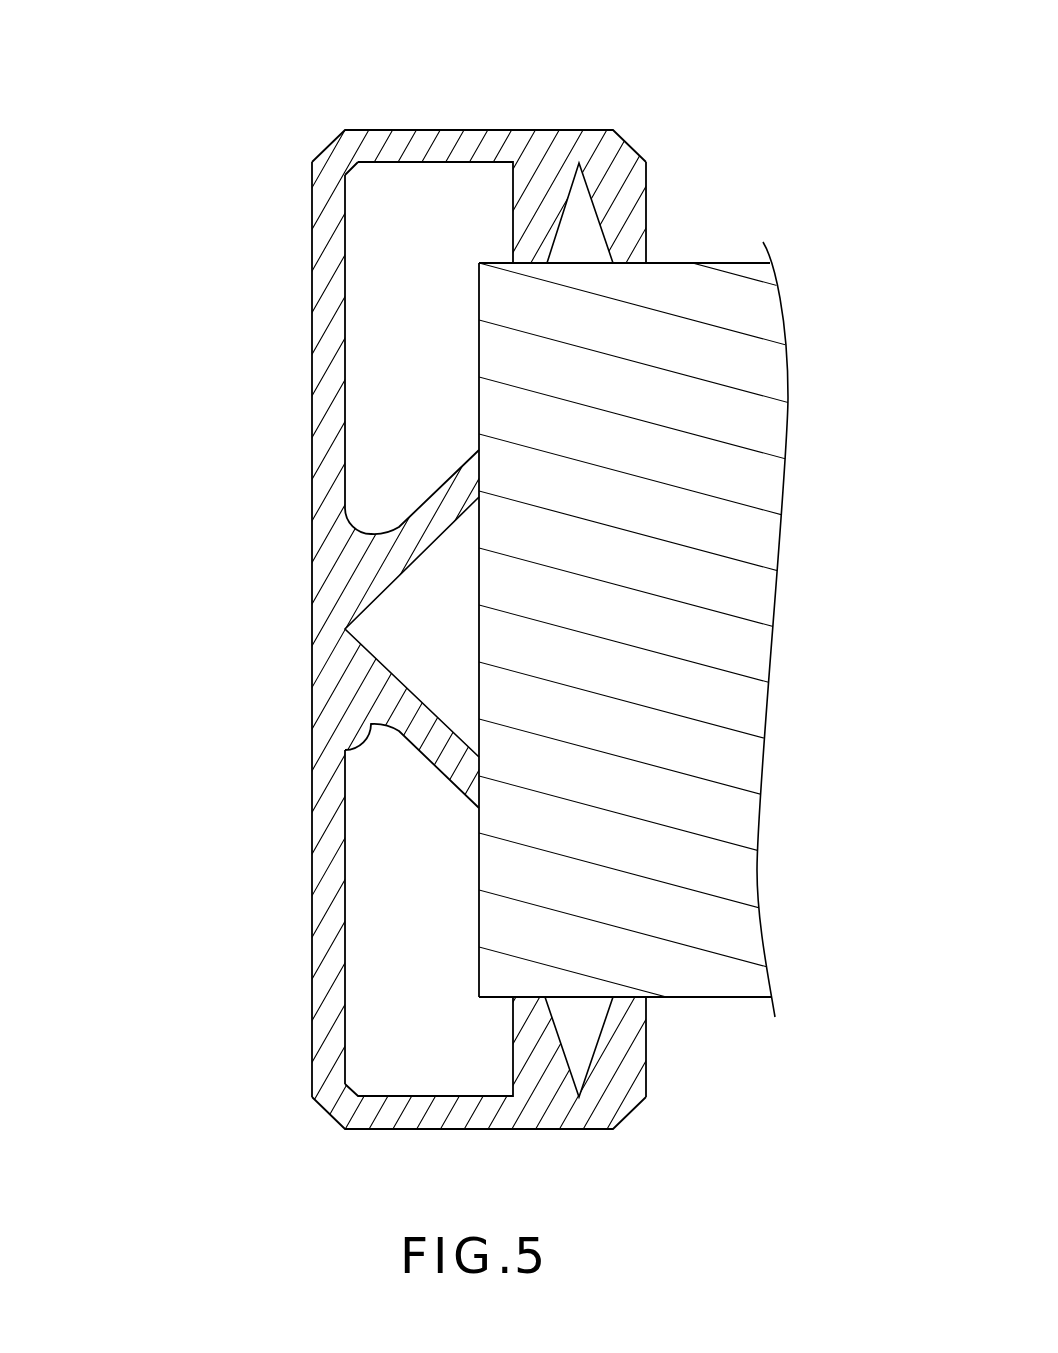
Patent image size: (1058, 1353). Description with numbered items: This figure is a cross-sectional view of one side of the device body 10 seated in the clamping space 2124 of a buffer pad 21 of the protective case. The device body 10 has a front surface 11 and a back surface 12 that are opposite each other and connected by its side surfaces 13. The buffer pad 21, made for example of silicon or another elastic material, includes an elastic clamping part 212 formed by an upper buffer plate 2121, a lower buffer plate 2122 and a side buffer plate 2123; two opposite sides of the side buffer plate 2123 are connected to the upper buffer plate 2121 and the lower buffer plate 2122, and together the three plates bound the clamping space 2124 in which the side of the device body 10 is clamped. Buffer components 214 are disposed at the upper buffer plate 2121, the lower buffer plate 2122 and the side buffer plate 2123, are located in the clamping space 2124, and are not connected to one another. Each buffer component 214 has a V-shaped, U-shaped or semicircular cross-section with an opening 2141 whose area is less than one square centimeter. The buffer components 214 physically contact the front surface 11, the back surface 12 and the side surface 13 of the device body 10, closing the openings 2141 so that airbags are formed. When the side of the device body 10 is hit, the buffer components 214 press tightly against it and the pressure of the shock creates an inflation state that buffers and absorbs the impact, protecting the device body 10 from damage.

The device body 10 is at (730, 460).
The front surface 11 is at (738, 262).
The back surface 12 is at (738, 998).
The side surface 13 is at (478, 858).
The buffer pad 21 is at (520, 122).
The elastic clamping part 212 is at (118, 583).
The upper buffer plate 2121 is at (441, 150).
The lower buffer plate 2122 is at (441, 1112).
The side buffer plate 2123 is at (328, 632).
The clamping space 2124 is at (649, 993).
The buffer component 214 is at (633, 217).
The opening 2141 is at (579, 243).